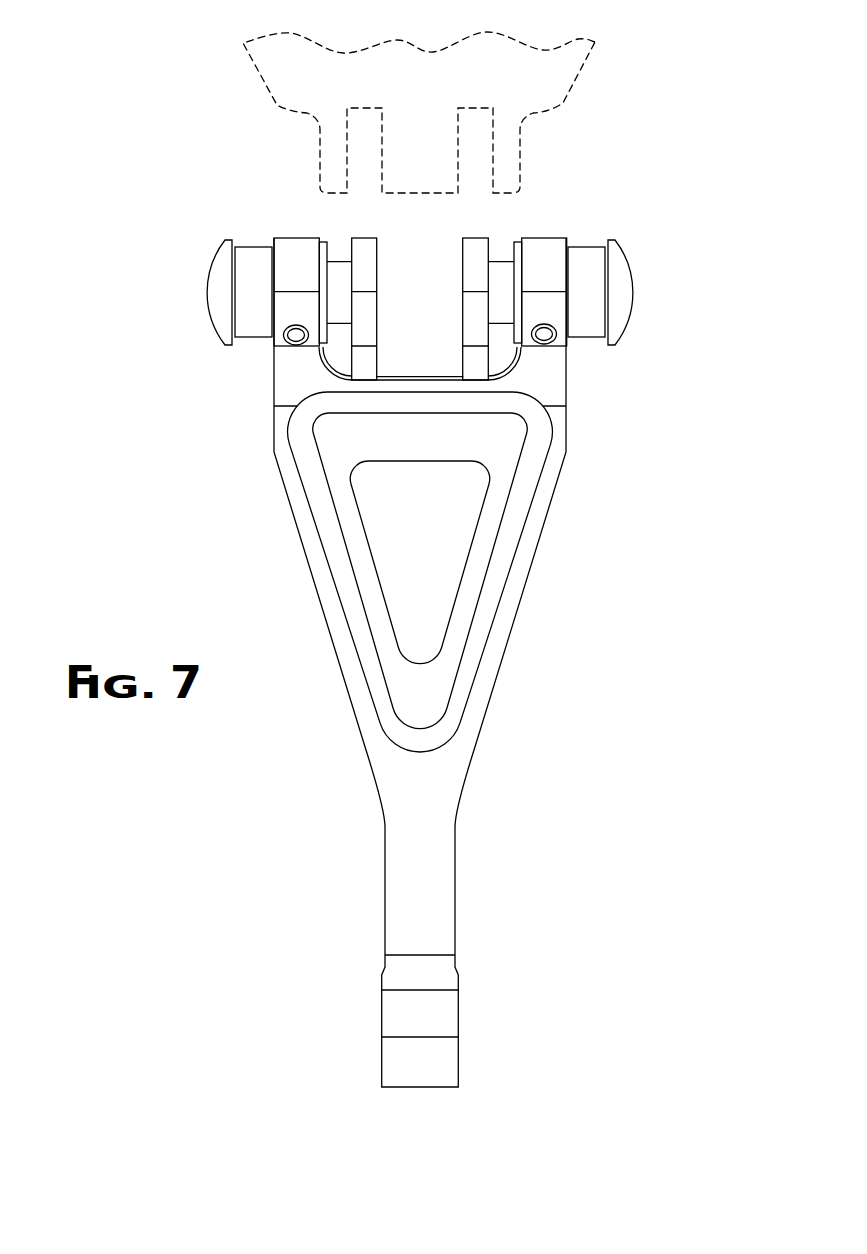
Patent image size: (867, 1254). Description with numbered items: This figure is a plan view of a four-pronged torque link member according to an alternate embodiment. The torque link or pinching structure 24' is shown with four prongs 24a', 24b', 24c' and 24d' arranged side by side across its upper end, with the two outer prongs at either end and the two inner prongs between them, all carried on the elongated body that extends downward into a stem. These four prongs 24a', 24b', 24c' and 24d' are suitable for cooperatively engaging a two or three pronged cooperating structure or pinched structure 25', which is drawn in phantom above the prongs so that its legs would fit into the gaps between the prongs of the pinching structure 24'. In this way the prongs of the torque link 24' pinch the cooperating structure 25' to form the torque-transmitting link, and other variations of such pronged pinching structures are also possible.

The torque link or pinching structure 24' is at (405, 628).
The prong 24a' is at (249, 258).
The prong 24b' is at (400, 291).
The prong 24c' is at (503, 289).
The prong 24d' is at (576, 272).
The cooperating structure or pinched structure 25' is at (456, 112).